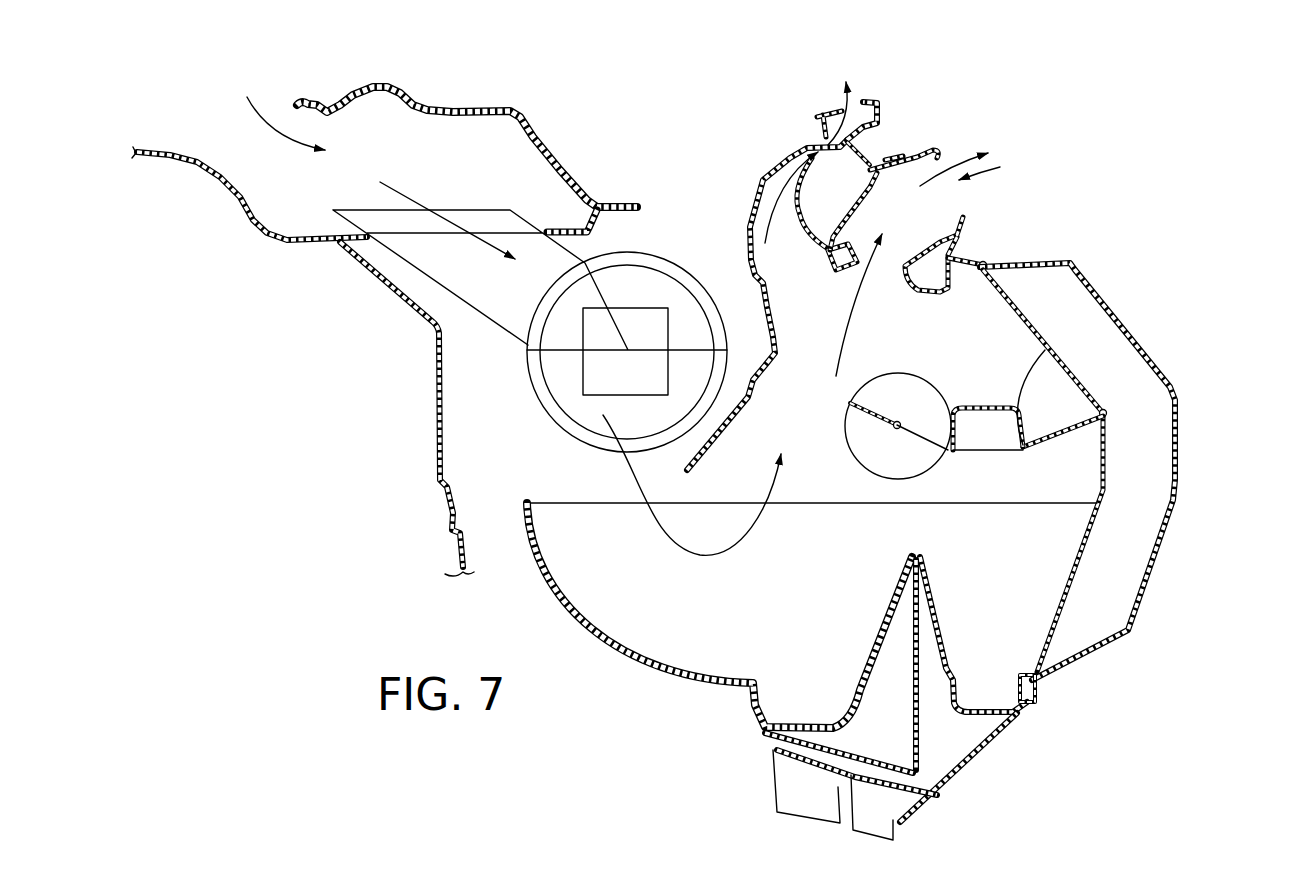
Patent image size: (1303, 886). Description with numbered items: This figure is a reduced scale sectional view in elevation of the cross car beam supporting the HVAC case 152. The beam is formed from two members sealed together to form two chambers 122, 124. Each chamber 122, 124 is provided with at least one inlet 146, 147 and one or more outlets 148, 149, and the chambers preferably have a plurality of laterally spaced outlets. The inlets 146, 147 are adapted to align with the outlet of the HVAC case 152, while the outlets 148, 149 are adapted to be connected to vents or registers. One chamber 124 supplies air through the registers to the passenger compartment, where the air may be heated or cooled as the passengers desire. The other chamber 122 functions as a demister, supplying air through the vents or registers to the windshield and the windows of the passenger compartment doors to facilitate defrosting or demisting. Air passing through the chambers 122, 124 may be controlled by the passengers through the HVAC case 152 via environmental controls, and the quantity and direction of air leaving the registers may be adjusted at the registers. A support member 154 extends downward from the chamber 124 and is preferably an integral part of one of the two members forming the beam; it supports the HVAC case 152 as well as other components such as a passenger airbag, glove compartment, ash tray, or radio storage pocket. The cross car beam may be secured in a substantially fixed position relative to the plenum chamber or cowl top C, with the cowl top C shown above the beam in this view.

The cowl top C is at (448, 106).
The chamber 122 is at (882, 112).
The chamber 124 is at (935, 228).
The inlet 146 is at (780, 167).
The inlet 147 is at (848, 296).
The outlet 148 is at (865, 96).
The outlet 149 is at (990, 167).
The HVAC case 152 is at (1107, 460).
The support member 154 is at (1133, 340).